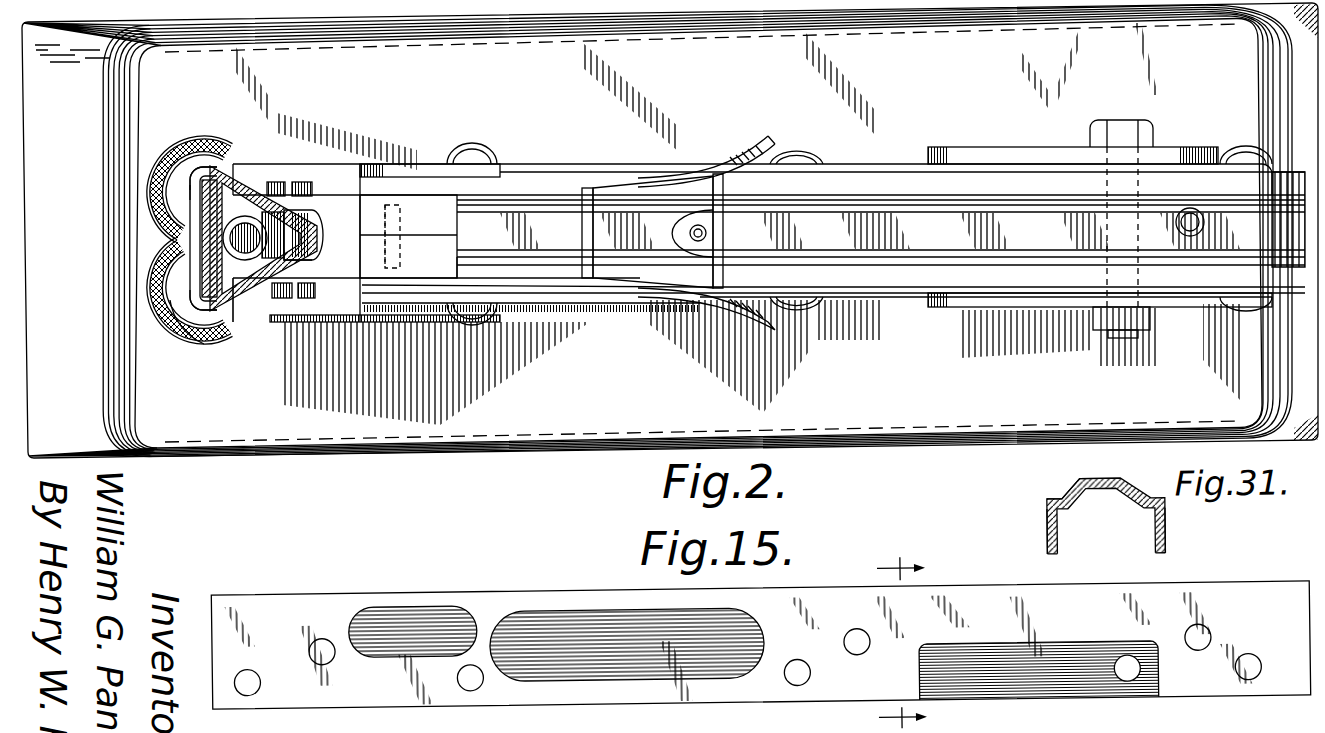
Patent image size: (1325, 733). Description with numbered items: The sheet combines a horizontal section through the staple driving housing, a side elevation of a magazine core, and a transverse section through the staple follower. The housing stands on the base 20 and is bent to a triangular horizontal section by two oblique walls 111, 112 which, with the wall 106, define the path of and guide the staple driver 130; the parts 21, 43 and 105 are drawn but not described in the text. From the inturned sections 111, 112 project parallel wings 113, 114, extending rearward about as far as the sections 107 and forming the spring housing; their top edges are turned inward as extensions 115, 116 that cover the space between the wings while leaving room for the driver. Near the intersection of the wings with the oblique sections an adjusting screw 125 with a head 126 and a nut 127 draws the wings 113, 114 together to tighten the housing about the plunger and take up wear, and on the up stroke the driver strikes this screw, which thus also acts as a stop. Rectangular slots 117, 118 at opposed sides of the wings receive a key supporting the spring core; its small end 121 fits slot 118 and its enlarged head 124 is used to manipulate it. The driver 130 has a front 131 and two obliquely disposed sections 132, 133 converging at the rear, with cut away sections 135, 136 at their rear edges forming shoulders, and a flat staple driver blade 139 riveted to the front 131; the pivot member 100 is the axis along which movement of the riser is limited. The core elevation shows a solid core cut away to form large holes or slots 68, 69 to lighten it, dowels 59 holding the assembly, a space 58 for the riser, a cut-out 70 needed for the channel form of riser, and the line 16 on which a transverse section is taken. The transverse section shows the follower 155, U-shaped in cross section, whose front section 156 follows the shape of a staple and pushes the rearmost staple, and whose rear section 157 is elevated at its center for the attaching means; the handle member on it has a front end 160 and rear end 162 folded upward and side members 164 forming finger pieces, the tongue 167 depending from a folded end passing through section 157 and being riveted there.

In FIG. 2, the base 20 is at (1000, 432).
In FIG. 2, the upper roller 21 is at (177, 137).
In FIG. 2, the guide plate 43 is at (998, 147).
In FIG. 2, the pivot member 100 is at (1133, 343).
In FIG. 2, the slide bar 105 is at (323, 163).
In FIG. 2, the wall 106 is at (190, 290).
In FIG. 2, the sections 107 is at (425, 165).
In FIG. 2, the oblique wall 111 is at (226, 335).
In FIG. 2, the oblique wall 112 is at (211, 176).
In FIG. 2, the wing 113 is at (342, 300).
In FIG. 2, the wing 114 is at (334, 195).
In FIG. 2, the extension 115 is at (408, 243).
In FIG. 2, the extension 116 is at (408, 249).
In FIG. 2, the rectangular slot 117 is at (403, 268).
In FIG. 2, the rectangular slot 118 is at (405, 193).
In FIG. 2, the small end 121 is at (389, 180).
In FIG. 2, the head 124 is at (430, 292).
In FIG. 2, the adjusting screw 125 is at (326, 226).
In FIG. 2, the head 126 is at (303, 184).
In FIG. 2, the nut 127 is at (306, 300).
In FIG. 2, the staple driver 130 is at (195, 333).
In FIG. 2, the front 131 is at (200, 240).
In FIG. 2, the obliquely disposed section 132 is at (233, 296).
In FIG. 2, the obliquely disposed section 133 is at (238, 195).
In FIG. 2, the cut away section 135 is at (300, 277).
In FIG. 2, the cut away section 136 is at (305, 207).
In FIG. 2, the staple driver blade 139 is at (200, 192).
In FIG. 2, the front end 160 is at (588, 190).
In FIG. 2, the rear end 162 is at (720, 190).
In FIG. 2, the side member 164 is at (753, 143).
In FIG. 15, the space 58 is at (978, 703).
In FIG. 15, the dowel 59 is at (324, 650).
In FIG. 15, the hole or slot 68 is at (438, 613).
In FIG. 15, the hole or slot 69 is at (557, 618).
In FIG. 15, the cut-out 70 is at (1067, 659).
In FIG. 15, the section line 16 is at (886, 643).
In FIG. 31, the follower 155 is at (1118, 490).
In FIG. 31, the front section 156 is at (1058, 503).
In FIG. 31, the rear section 157 is at (1044, 543).
In FIG. 31, the tongue 167 is at (1092, 481).